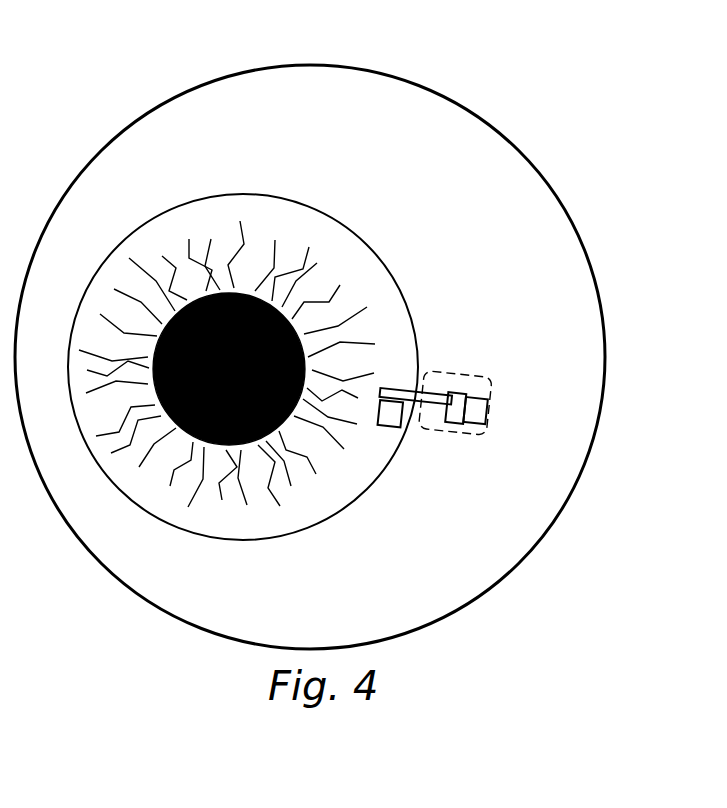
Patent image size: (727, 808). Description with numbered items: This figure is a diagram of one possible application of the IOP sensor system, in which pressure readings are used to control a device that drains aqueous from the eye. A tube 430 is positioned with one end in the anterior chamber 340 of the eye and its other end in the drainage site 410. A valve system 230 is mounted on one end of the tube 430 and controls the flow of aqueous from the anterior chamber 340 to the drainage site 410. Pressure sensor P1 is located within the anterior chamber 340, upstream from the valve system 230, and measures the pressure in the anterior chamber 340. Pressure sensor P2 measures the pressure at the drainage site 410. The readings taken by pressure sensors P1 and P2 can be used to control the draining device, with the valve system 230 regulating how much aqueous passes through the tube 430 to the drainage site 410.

The anterior chamber 340 is at (368, 268).
The drainage site 410 is at (478, 378).
The tube 430 is at (432, 397).
The valve system 230 is at (488, 447).
The pressure sensor P1 is at (387, 427).
The pressure sensor P2 is at (477, 420).